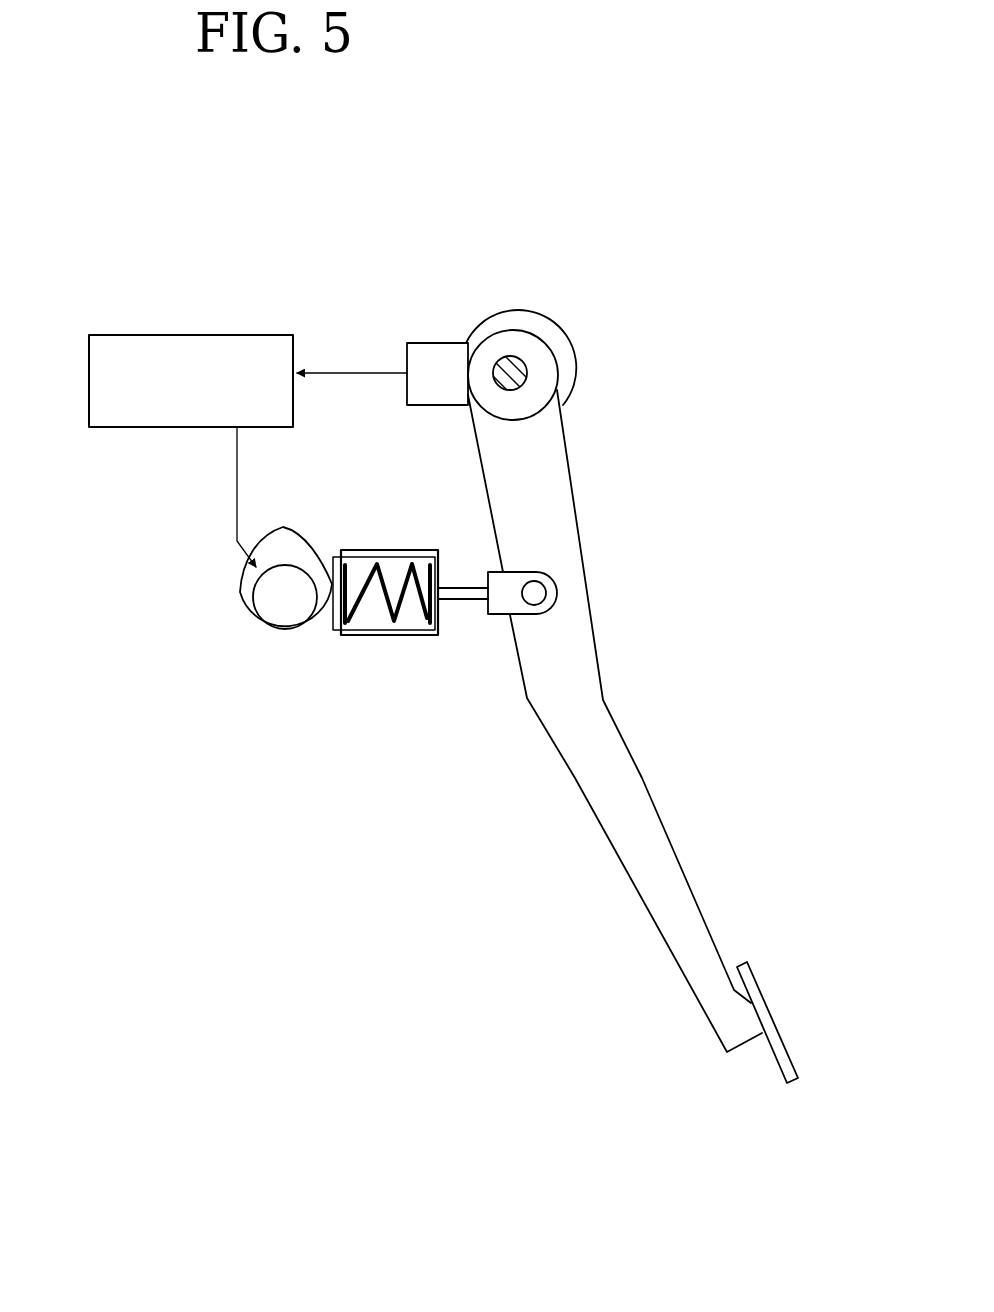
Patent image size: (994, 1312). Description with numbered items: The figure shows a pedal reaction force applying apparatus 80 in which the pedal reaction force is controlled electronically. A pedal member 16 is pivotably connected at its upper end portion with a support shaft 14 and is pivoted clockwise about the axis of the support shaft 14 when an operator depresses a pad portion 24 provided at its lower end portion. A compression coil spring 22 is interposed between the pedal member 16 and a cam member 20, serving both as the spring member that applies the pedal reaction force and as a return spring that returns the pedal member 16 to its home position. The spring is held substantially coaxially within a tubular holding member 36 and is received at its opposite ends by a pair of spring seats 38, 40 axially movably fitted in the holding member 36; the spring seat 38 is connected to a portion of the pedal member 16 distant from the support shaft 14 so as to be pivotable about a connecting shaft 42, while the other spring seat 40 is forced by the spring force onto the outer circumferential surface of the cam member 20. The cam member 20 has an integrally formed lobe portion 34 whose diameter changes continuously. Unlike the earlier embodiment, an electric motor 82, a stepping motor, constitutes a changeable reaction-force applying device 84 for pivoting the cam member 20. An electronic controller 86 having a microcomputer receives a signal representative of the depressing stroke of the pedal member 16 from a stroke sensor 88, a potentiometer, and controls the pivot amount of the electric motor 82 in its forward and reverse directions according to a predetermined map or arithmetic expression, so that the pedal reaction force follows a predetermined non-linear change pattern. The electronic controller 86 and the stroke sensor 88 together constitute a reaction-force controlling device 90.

The support shaft 14 is at (513, 371).
The pedal member 16 is at (612, 765).
The cam member 20 is at (245, 600).
The compression coil spring 22 is at (409, 640).
The pad portion 24 is at (763, 1022).
The lobe portion 34 is at (290, 537).
The tubular holding member 36 is at (370, 638).
The spring seat 38 is at (444, 620).
The spring seat 40 is at (322, 640).
The connecting shaft 42 is at (546, 593).
The pedal reaction force applying apparatus 80 is at (645, 264).
The electric motor 82 is at (275, 607).
The changeable reaction-force applying device 84 is at (280, 672).
The electronic controller 86 is at (247, 343).
The stroke sensor 88 is at (430, 362).
The reaction-force controlling device 90 is at (116, 270).